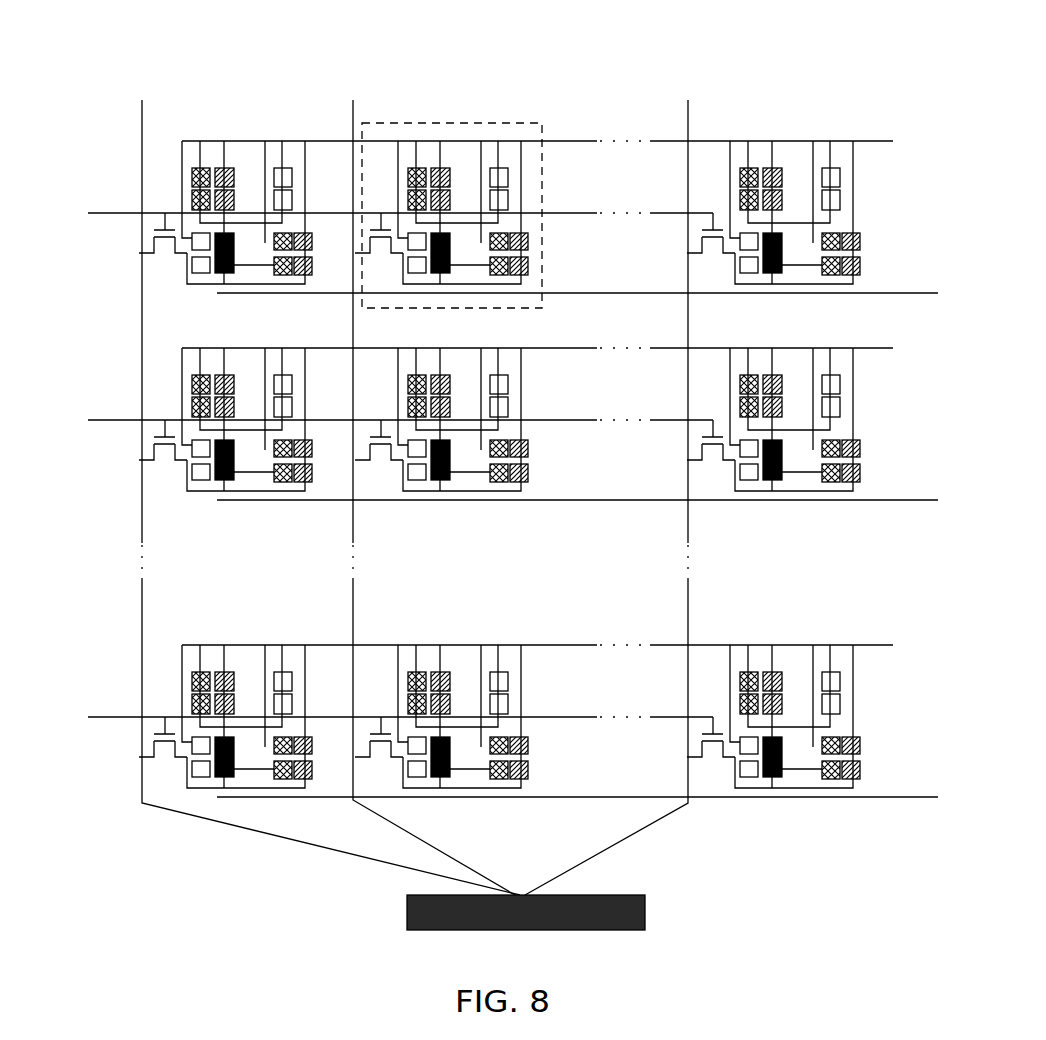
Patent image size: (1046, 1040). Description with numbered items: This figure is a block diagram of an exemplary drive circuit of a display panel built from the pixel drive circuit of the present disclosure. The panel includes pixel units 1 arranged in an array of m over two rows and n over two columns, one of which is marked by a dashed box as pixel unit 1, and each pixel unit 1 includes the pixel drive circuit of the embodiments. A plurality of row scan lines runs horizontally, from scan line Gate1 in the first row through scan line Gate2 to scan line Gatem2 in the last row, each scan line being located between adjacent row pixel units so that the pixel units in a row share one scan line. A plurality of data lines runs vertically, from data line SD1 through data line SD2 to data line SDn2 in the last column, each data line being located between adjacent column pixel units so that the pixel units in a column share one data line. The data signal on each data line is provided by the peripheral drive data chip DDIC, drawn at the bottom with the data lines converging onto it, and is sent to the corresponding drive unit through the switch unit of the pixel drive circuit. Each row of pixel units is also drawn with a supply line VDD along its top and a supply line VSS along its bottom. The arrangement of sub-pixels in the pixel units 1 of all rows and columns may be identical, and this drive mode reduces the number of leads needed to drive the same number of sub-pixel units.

The pixel unit 1 is at (440, 122).
The peripheral drive data chip DDIC is at (526, 912).
The data line SD1 is at (309, 497).
The data line SD2 is at (411, 497).
The data line SDn/2 SDn2 is at (607, 497).
The scan line Gate 1 Gate1 is at (387, 201).
The scan line Gate 2 Gate2 is at (388, 410).
The scan line Gate m/2 Gatem2 is at (387, 705).
The power supply line VDD is at (546, 379).
The power supply line VSS is at (577, 531).